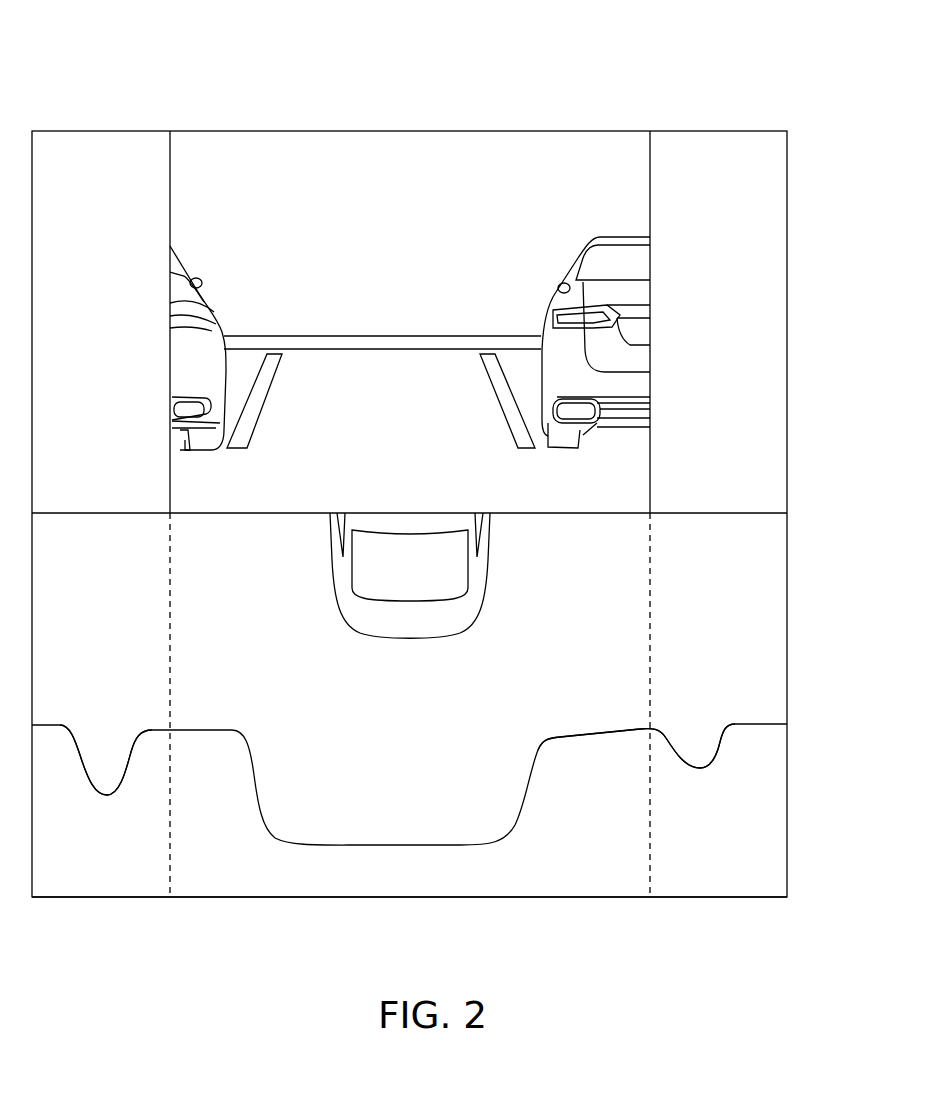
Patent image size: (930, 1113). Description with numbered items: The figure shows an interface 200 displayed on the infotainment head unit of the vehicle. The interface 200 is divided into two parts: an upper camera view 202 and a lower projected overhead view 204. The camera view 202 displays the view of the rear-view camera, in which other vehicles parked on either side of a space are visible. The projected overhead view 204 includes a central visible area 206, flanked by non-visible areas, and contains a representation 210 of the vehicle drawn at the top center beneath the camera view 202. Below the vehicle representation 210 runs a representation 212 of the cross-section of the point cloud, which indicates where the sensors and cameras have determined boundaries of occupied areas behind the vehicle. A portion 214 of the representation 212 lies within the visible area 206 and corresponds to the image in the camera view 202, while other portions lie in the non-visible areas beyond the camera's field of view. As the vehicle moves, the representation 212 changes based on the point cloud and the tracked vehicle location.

The interface 200 is at (311, 76).
The camera view 202 is at (787, 312).
The projected overhead view 204 is at (787, 617).
The visible area 206 is at (405, 880).
The representation of the vehicle 210 is at (487, 592).
The representation of the cross-section of the point cloud 212 is at (330, 828).
The portion of the representation of the cross-section of the point cloud 214 is at (569, 730).